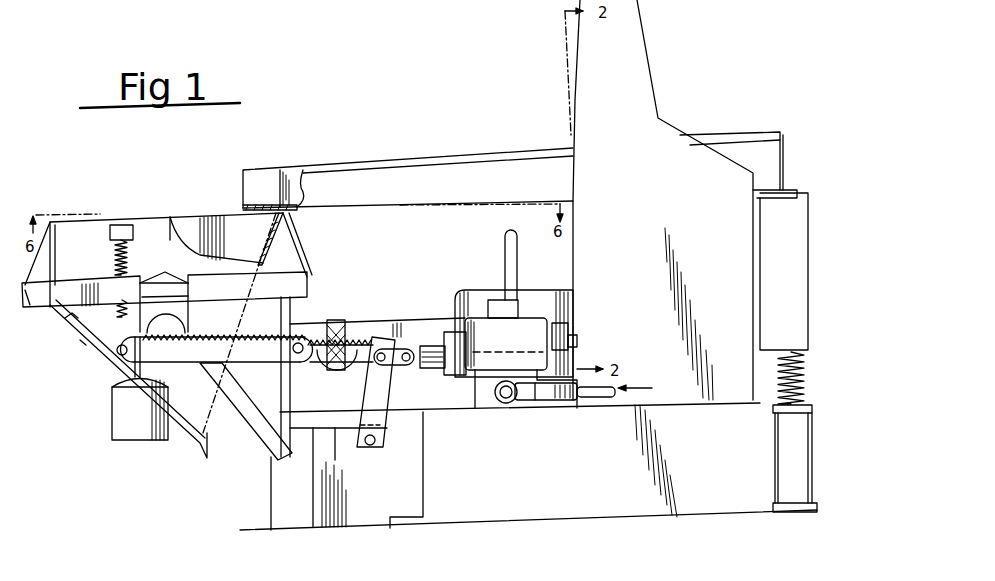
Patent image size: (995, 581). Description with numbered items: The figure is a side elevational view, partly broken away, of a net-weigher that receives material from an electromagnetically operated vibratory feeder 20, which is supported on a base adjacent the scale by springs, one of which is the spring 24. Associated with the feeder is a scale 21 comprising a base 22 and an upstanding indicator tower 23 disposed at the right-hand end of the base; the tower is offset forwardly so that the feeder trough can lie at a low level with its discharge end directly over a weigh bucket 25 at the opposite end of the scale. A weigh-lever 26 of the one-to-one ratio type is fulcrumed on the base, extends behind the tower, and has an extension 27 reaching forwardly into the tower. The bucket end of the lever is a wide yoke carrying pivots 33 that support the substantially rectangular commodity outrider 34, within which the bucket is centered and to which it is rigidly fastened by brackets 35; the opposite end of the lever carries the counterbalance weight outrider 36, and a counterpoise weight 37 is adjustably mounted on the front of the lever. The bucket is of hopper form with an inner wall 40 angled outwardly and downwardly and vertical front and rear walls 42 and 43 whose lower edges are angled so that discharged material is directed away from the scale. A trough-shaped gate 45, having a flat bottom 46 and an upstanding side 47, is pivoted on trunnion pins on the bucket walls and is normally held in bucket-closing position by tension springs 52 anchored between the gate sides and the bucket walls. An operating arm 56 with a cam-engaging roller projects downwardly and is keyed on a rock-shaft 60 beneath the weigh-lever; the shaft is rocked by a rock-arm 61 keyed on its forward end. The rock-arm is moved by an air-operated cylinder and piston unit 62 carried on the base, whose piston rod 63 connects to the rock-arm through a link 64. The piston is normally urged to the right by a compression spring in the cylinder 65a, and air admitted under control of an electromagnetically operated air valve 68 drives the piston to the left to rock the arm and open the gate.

The vibratory feeder 20 is at (722, 122).
The scale 21 is at (383, 276).
The base 22 is at (475, 515).
The indicator tower 23 is at (576, 50).
The spring 24 is at (778, 368).
The weigh bucket 25 is at (183, 208).
The weigh-lever 26 is at (420, 322).
The extension 27 is at (575, 338).
The pivots 33 is at (335, 318).
The commodity outrider 34 is at (292, 278).
The brackets 35 is at (50, 222).
The counterbalance weight outrider 36 is at (476, 292).
The counterpoise weight 37 is at (130, 440).
The inner wall 40 is at (283, 247).
The front wall 42 is at (143, 225).
The rear wall 43 is at (232, 222).
The gate 45 is at (210, 437).
The flat bottom 46 is at (83, 342).
The side 47 is at (70, 316).
The tension springs 52 is at (116, 242).
The operating arm 56 is at (268, 450).
The rock-shaft 60 is at (368, 448).
The rock-arm 61 is at (368, 393).
The air-operated cylinder and piston unit 62 is at (452, 374).
The piston rod 63 is at (421, 366).
The link 64 is at (388, 348).
The cylinder 65a is at (455, 334).
The air valve 68 is at (534, 302).